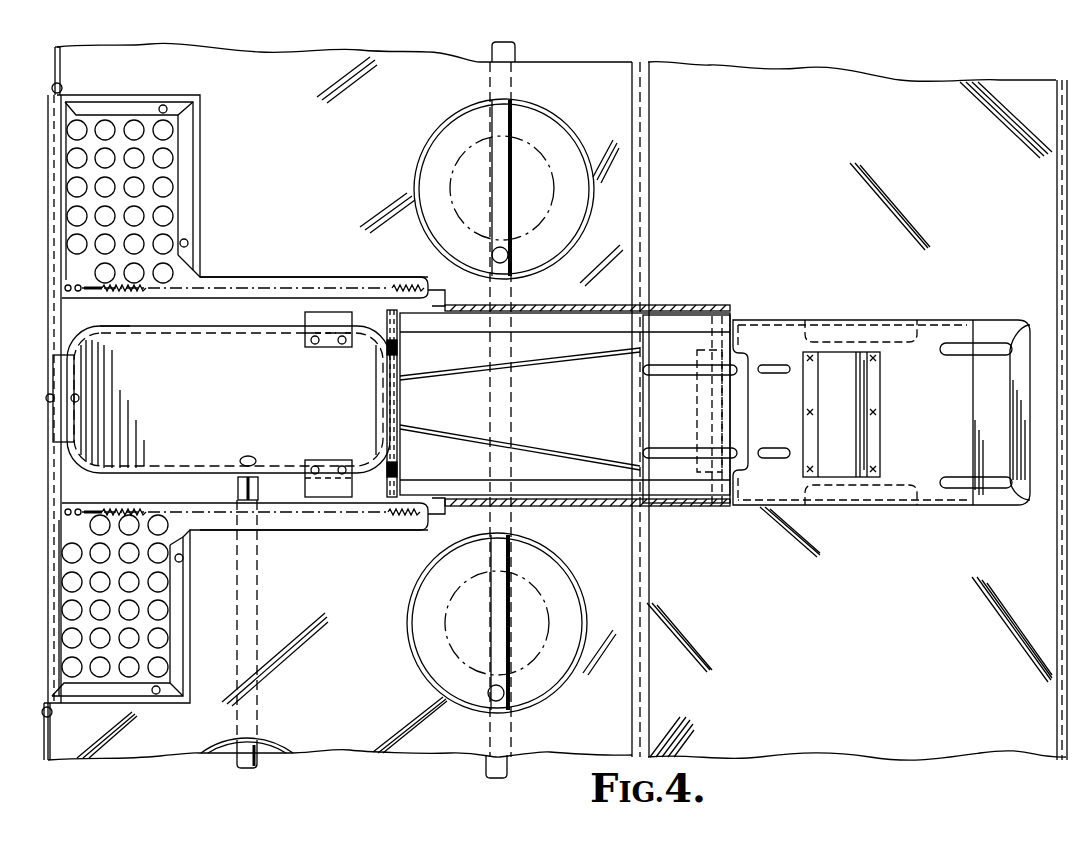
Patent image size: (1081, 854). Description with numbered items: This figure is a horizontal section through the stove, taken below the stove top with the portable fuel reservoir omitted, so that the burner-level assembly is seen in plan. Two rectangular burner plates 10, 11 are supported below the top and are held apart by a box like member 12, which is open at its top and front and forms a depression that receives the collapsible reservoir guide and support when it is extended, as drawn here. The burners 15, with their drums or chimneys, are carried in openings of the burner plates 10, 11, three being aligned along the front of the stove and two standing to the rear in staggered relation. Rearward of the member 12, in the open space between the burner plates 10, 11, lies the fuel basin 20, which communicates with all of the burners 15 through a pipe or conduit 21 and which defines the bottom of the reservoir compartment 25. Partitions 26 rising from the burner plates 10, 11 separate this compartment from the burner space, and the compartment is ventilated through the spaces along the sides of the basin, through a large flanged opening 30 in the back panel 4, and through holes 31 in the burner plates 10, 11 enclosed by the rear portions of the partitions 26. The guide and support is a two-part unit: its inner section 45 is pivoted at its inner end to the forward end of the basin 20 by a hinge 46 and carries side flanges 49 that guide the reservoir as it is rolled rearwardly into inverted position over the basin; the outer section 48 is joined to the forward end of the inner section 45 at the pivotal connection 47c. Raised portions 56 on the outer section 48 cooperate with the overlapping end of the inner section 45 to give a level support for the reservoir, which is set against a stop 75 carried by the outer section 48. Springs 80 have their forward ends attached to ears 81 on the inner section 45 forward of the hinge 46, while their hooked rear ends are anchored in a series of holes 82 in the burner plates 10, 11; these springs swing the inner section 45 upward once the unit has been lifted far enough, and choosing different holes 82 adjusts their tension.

The back panel 4 is at (57, 62).
The burner plate 10 is at (564, 632).
The burner plate 11 is at (684, 171).
The box like member 12 is at (642, 274).
The burners 15 is at (550, 150).
The fuel basin 20 is at (218, 404).
The pipe or conduit 21 is at (517, 52).
The reservoir compartment 25 is at (234, 320).
The partitions 26 is at (200, 213).
The opening 30 is at (60, 480).
The holes 31 is at (100, 190).
The inner section 45 is at (568, 408).
The hinge 46 is at (390, 310).
The pivotal connection 47c is at (724, 328).
The outer section 48 is at (775, 332).
The side flanges 49 is at (528, 314).
The raised portions 56 is at (774, 376).
The stop 75 is at (843, 396).
The springs 80 is at (292, 290).
The ears 81 is at (462, 284).
The holes 82 is at (72, 292).